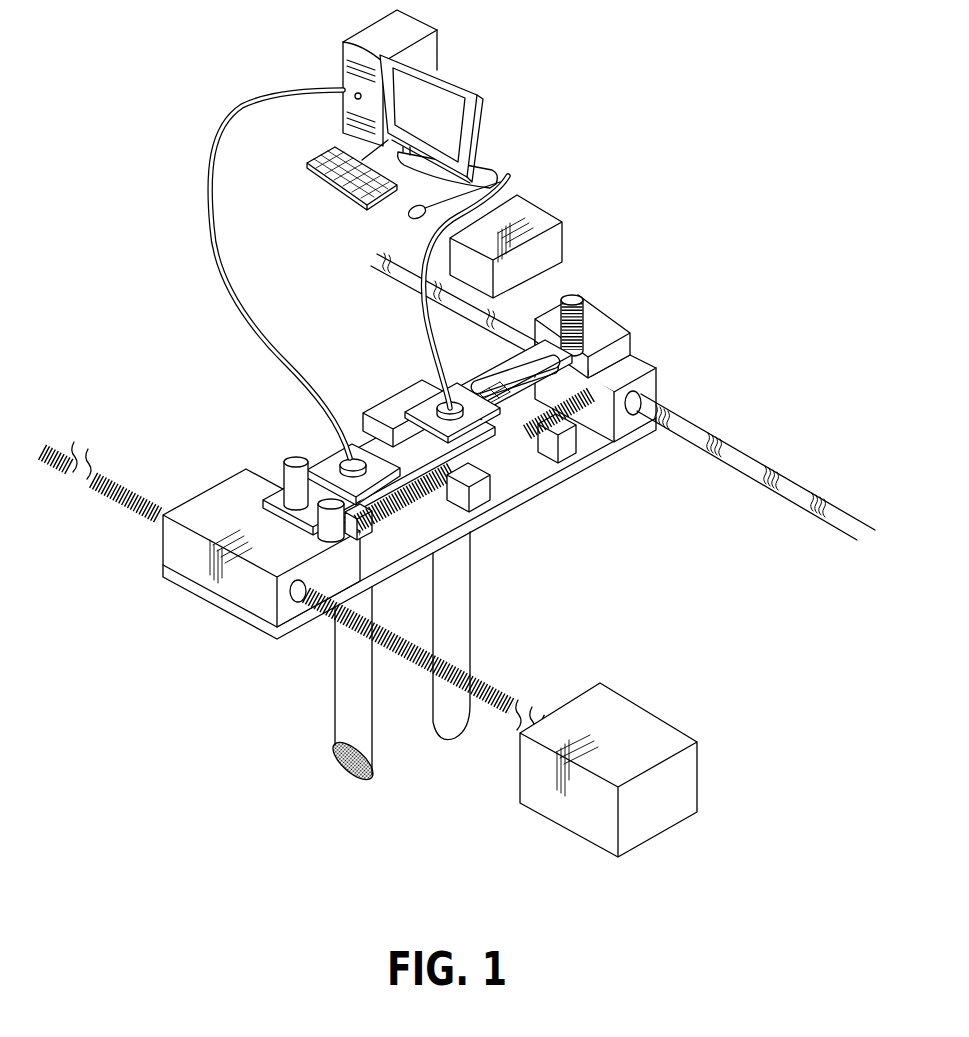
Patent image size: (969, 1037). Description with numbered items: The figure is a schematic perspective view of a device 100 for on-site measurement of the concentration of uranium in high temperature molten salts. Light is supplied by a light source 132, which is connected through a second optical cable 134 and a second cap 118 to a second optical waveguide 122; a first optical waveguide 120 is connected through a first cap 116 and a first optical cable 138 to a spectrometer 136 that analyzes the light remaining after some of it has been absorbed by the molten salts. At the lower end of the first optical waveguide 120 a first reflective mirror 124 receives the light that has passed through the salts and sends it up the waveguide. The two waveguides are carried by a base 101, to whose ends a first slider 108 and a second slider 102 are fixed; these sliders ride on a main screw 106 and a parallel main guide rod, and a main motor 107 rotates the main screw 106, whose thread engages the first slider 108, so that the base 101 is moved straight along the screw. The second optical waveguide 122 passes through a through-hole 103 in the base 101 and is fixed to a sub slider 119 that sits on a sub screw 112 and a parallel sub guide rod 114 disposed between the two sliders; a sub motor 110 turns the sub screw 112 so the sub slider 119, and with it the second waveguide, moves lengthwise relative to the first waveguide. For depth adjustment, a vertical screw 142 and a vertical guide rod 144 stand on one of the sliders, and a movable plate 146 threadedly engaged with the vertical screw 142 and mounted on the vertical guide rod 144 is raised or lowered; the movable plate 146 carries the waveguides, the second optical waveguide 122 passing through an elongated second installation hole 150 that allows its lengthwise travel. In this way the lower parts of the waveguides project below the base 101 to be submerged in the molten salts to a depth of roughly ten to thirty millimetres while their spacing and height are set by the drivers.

The device for on-site measurement of concentration of uranium 100 is at (757, 401).
The base 101 is at (193, 593).
The second slider 102 is at (635, 357).
The through-hole 103 is at (565, 450).
The main screw 106 is at (123, 505).
The main motor 107 is at (568, 707).
The first slider 108 is at (262, 612).
The sub motor 110 is at (305, 528).
The sub screw 112 is at (446, 478).
The sub guide rod 114 is at (345, 440).
The first cap 116 is at (285, 476).
The second cap 118 is at (554, 443).
The sub slider 119 is at (400, 407).
The first optical waveguide 120 is at (366, 730).
The second optical waveguide 122 is at (462, 583).
The first reflective mirror 124 is at (368, 782).
The light source 132 is at (536, 207).
The second optical cable 134 is at (463, 217).
The spectrometer 136 is at (447, 68).
The first optical cable 138 is at (245, 98).
The vertical screw 142 is at (588, 318).
The vertical guide rod 144 is at (320, 533).
The movable plate 146 is at (605, 343).
The second installation hole 150 is at (527, 357).